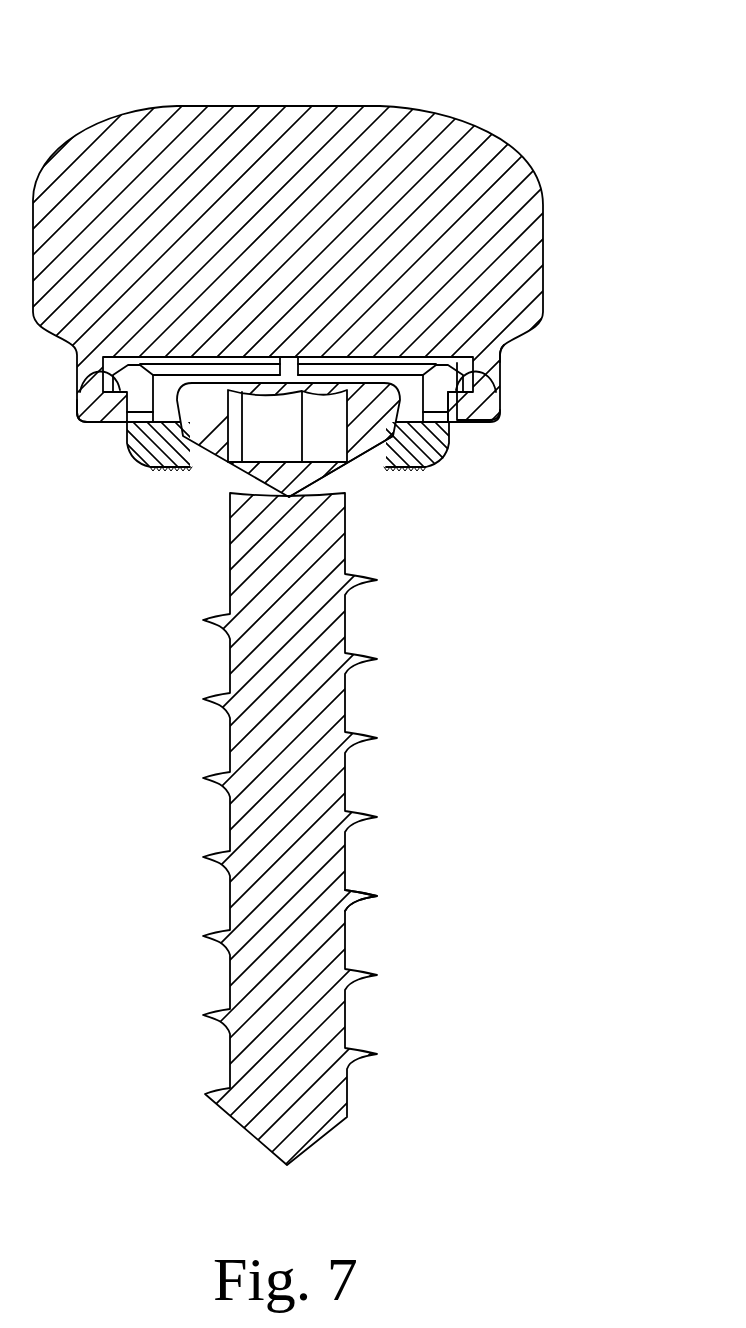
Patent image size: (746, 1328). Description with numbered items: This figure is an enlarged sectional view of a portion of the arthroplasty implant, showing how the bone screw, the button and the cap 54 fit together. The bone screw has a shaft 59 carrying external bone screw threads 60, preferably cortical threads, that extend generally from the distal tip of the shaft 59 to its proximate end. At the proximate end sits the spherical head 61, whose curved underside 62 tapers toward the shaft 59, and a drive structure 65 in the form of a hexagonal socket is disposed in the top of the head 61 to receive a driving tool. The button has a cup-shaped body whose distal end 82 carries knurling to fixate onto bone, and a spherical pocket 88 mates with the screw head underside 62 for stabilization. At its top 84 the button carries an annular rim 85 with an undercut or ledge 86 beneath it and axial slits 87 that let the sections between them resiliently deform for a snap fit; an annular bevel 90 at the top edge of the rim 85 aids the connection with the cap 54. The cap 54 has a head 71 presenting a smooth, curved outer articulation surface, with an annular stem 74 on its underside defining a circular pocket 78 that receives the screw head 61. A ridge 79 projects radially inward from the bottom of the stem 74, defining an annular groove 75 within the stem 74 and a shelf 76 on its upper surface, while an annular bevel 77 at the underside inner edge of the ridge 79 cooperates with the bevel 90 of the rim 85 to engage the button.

The cap 54 is at (535, 107).
The head 71 is at (486, 202).
The top 84 is at (136, 376).
The slits 87 is at (297, 374).
The circular pocket 78 is at (357, 352).
The ridge 79 is at (447, 386).
The annular bevel 90 is at (480, 352).
The annular rim 85 is at (82, 382).
The annular stem 74 is at (487, 385).
The shelf 76 is at (490, 402).
The annular groove 75 is at (477, 408).
The annular bevel 77 is at (462, 423).
The ledge 86 is at (100, 412).
The distal end 82 is at (150, 468).
The spherical pocket 88 is at (200, 470).
The drive structure 65 is at (238, 497).
The spherical head 61 is at (402, 468).
The curved underside 62 is at (356, 490).
The shaft 59 is at (262, 915).
The threads 60 is at (374, 893).